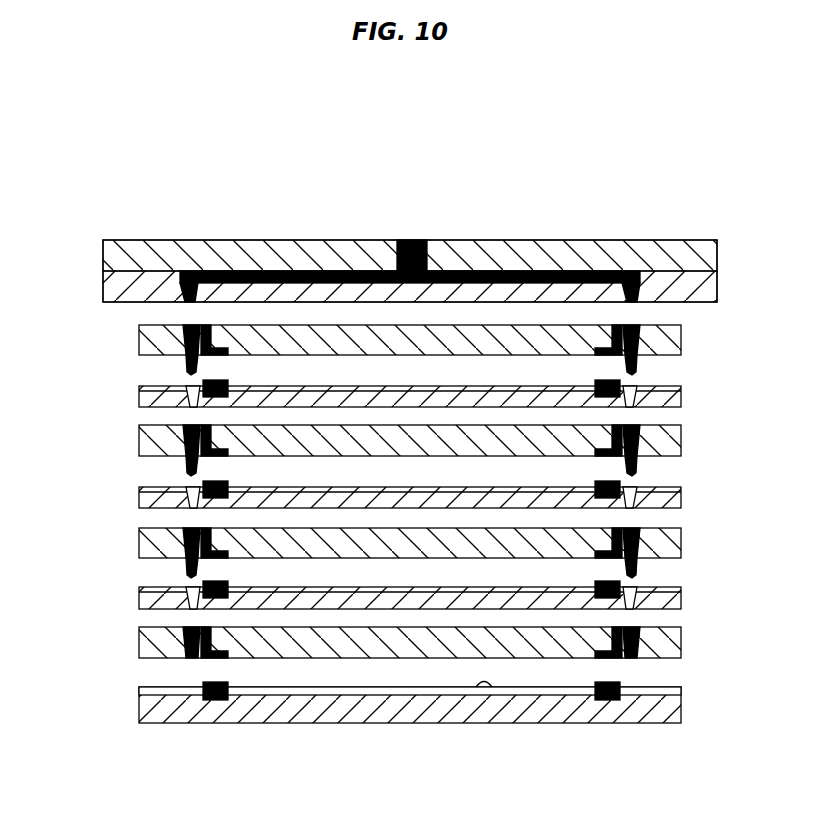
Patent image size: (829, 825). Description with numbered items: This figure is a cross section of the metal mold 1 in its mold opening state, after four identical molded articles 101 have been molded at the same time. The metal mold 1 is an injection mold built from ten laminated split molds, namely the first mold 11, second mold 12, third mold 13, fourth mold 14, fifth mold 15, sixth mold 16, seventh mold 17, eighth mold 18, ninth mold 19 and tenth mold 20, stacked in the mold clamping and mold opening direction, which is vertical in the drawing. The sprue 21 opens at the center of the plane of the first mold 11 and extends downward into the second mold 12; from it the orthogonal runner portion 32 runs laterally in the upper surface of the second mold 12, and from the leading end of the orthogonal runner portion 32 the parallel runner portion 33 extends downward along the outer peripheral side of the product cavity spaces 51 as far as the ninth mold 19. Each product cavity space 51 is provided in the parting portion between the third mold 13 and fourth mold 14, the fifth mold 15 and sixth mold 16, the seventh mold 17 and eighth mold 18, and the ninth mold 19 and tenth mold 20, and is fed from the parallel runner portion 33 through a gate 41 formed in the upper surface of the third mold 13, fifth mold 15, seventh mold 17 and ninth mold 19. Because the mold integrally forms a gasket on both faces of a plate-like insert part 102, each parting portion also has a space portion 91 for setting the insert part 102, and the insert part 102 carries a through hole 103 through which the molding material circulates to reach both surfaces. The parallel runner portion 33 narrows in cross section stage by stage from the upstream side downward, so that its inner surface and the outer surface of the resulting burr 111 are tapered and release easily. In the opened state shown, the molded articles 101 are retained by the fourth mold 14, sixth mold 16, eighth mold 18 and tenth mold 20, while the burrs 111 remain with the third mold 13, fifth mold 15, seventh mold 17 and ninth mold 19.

The metal mold 1 is at (245, 212).
The first mold 11 is at (110, 263).
The second mold 12 is at (112, 285).
The third mold 13 is at (143, 337).
The fourth mold 14 is at (143, 397).
The fifth mold 15 is at (143, 440).
The sixth mold 16 is at (143, 498).
The seventh mold 17 is at (143, 543).
The eighth mold 18 is at (143, 599).
The ninth mold 19 is at (143, 645).
The tenth mold 20 is at (155, 712).
The sprue 21 is at (408, 240).
The orthogonal runner portion 32 is at (527, 272).
The gate 41 is at (617, 337).
The product cavity space 51 is at (632, 368).
The burr 111 is at (640, 343).
The molded article 101 is at (622, 383).
The parallel runner portion 33 is at (638, 497).
The insert part 102 is at (340, 695).
The through hole 103 is at (215, 700).
The space portion 91 is at (488, 695).